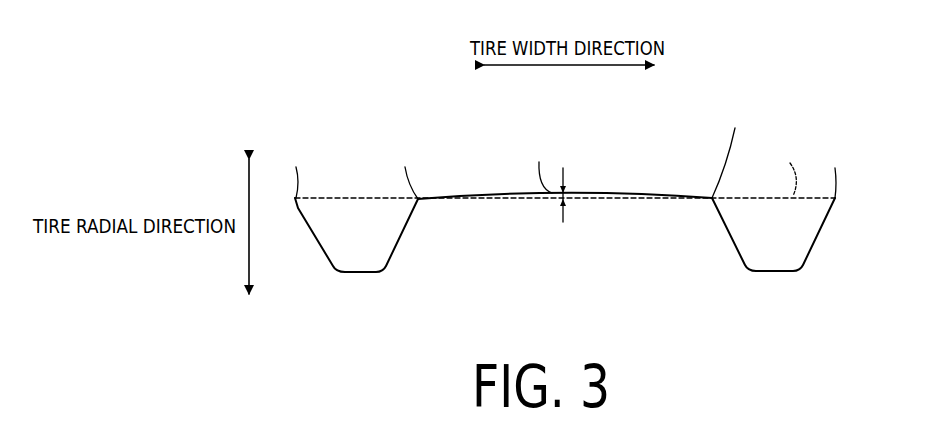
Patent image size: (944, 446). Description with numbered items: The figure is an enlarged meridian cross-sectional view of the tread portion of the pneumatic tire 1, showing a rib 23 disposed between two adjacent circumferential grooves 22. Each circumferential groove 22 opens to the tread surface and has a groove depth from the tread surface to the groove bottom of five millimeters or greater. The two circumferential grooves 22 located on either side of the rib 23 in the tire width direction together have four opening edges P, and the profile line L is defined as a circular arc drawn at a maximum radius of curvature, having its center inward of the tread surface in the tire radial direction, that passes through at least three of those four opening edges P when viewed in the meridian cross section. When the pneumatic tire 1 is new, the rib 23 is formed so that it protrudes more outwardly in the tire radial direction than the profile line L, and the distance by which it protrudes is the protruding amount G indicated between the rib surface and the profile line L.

The pneumatic tire 1 is at (760, 84).
The circumferential groove 22 is at (304, 228).
The rib 23 is at (645, 215).